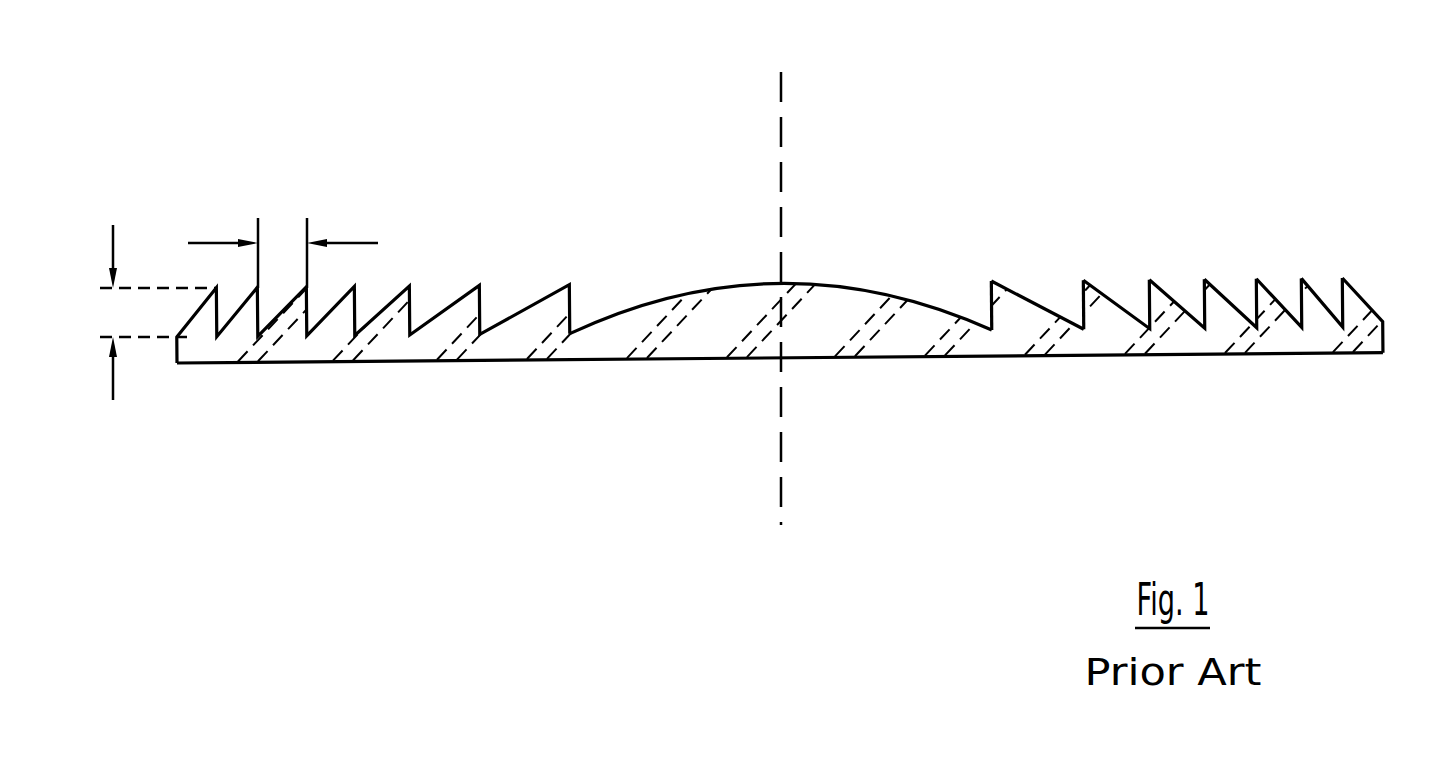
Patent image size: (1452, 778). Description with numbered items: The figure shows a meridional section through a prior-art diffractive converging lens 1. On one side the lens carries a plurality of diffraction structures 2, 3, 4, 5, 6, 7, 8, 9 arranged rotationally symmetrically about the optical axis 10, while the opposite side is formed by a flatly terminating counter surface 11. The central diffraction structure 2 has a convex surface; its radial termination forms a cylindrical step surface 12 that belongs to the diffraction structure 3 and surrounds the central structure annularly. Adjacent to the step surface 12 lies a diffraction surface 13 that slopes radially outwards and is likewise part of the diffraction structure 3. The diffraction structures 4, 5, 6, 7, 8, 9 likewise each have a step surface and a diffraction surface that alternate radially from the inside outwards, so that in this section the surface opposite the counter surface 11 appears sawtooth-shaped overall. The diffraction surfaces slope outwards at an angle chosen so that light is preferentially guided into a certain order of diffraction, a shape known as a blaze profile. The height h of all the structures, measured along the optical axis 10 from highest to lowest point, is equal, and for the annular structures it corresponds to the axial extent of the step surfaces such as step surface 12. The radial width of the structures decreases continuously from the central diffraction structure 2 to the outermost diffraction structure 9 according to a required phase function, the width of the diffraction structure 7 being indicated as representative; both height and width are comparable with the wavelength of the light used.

The diffractive converging lens 1 is at (920, 155).
The central diffraction structure 2 is at (927, 308).
The diffraction structure 3 is at (1046, 308).
The diffraction structure 4 is at (1134, 309).
The diffraction structure 5 is at (1190, 312).
The diffraction structure 6 is at (1244, 312).
The diffraction structure 7 is at (1294, 314).
The diffraction structure 8 is at (1338, 314).
The diffraction structure 9 is at (1363, 303).
The optical axis 10 is at (780, 503).
The counter surface 11 is at (613, 362).
The step surface 12 is at (992, 314).
The diffraction surface 13 is at (1049, 310).